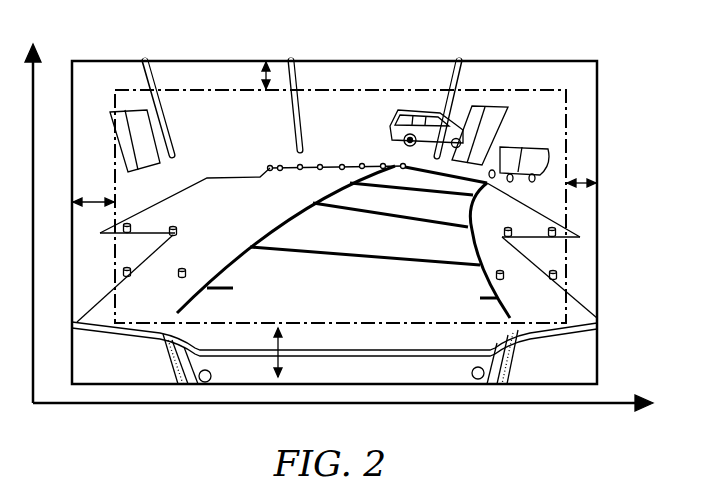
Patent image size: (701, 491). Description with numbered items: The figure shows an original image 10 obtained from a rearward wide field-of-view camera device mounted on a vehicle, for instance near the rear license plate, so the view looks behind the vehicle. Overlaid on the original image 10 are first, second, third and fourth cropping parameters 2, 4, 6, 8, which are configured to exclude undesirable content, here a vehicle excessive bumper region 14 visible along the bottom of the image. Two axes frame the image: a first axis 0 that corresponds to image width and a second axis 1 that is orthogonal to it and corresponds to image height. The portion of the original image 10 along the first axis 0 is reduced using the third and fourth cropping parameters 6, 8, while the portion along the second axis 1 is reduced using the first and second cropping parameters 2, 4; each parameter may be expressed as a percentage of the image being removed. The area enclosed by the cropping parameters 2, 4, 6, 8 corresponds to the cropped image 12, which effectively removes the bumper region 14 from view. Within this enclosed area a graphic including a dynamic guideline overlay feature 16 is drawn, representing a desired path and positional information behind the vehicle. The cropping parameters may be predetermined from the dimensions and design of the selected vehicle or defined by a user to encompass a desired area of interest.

The first axis 0 is at (351, 404).
The second axis 1 is at (33, 210).
The first cropping parameter 2 is at (255, 70).
The second cropping parameter 4 is at (289, 372).
The third cropping parameter 6 is at (93, 190).
The fourth cropping parameter 8 is at (583, 174).
The original image 10 is at (433, 52).
The cropped image 12 is at (572, 77).
The vehicle excessive bumper region 14 is at (409, 375).
The dynamic guideline overlay feature 16 is at (217, 297).